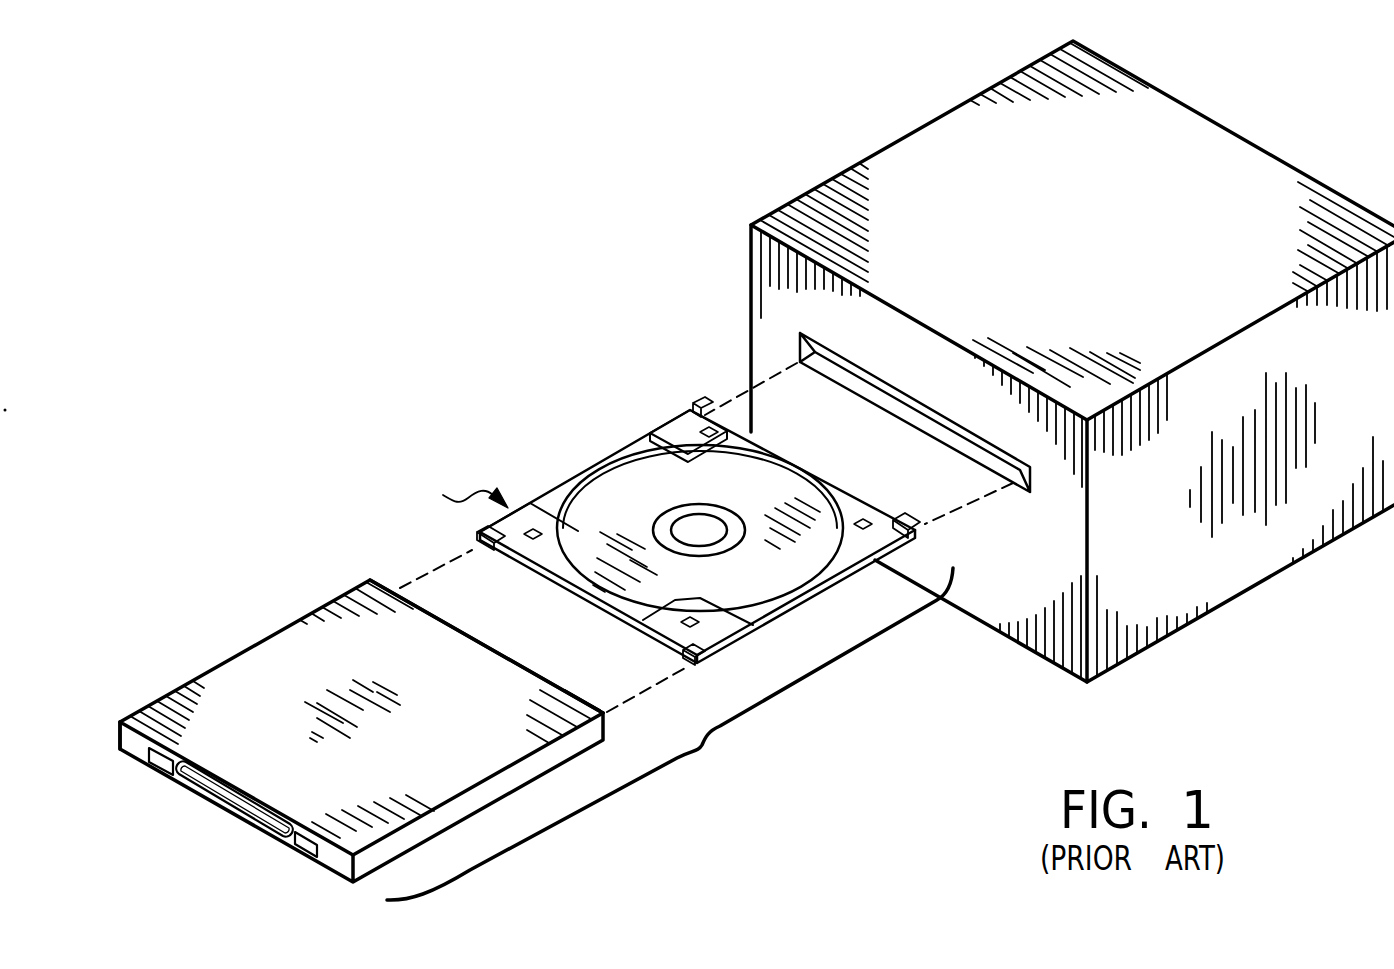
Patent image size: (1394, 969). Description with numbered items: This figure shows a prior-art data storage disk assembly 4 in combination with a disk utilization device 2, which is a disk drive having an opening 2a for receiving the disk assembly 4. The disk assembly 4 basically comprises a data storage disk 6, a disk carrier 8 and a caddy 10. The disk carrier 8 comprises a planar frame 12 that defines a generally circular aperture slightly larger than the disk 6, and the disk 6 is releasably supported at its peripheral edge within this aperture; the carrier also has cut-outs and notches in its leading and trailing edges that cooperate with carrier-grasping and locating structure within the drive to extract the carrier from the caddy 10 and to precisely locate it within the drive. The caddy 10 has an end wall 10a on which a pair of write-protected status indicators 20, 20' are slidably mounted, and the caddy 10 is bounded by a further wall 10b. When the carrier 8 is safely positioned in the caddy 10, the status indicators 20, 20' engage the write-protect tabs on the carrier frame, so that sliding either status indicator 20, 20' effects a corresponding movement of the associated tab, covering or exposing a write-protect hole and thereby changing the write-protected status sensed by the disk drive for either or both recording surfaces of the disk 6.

The disk utilization device 2 is at (1072, 361).
The opening 2a is at (1013, 485).
The disk assembly 4 is at (700, 754).
The data storage disk 6 is at (668, 504).
The disk carrier 8 is at (466, 491).
The caddy 10 is at (321, 744).
The end wall 10a is at (120, 740).
The cartridge rear edge 10b is at (513, 660).
The planar frame 12 is at (830, 577).
The write-protected status indicator 20 is at (286, 870).
The write-protected status indicator 20' is at (137, 783).